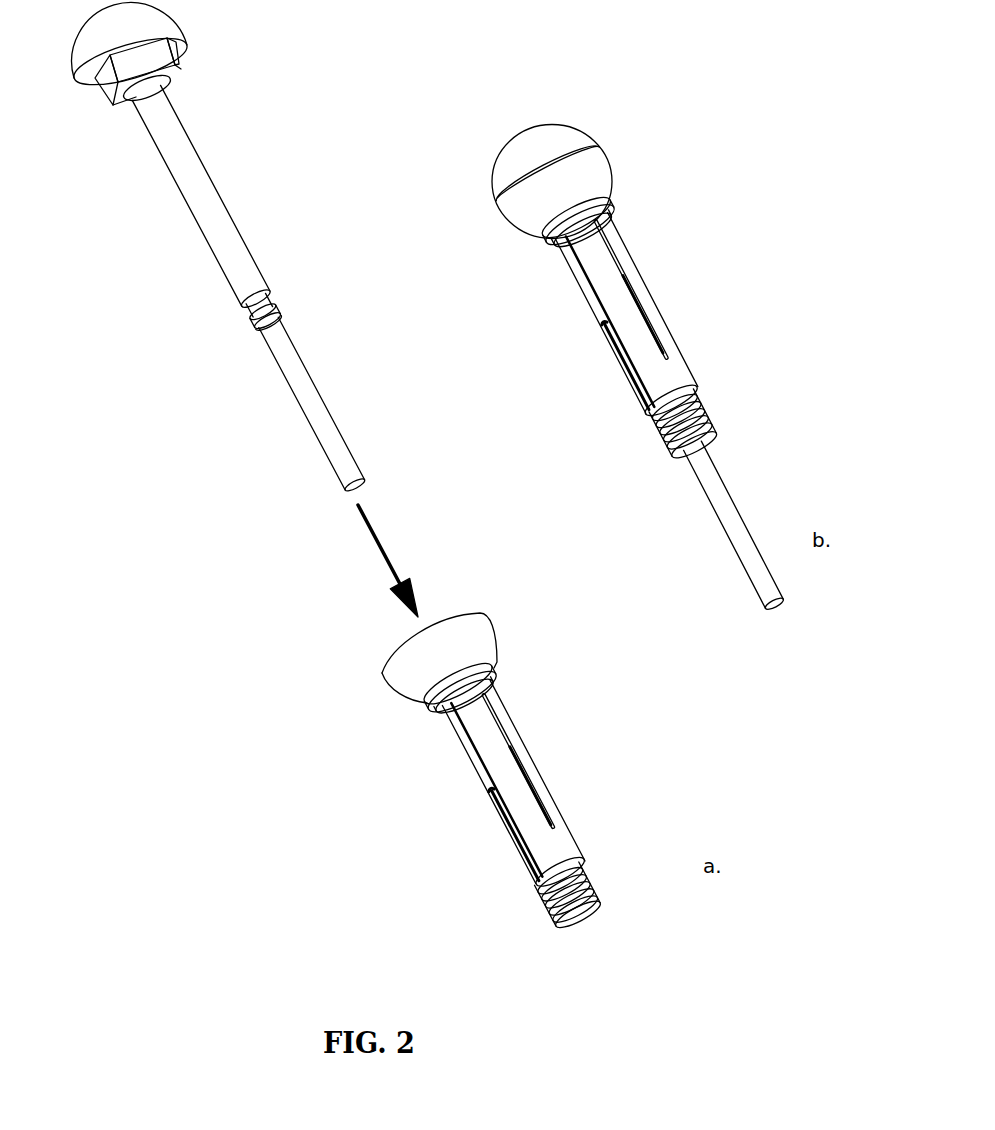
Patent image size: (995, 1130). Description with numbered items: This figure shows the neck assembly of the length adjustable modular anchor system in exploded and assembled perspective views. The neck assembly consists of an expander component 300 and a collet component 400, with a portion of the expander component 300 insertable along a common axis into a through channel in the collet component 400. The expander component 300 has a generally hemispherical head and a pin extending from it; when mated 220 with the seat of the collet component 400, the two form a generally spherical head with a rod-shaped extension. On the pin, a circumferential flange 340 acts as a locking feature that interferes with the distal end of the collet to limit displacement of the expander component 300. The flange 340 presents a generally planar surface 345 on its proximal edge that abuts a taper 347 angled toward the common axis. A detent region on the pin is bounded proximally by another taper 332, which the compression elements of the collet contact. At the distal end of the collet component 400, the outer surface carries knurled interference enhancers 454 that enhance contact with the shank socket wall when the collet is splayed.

The expander component 300 is at (226, 133).
The taper 332 is at (250, 298).
The generally planar surface 345 is at (274, 310).
The circumferential flange 340 is at (278, 313).
The taper 347 is at (280, 320).
The mated arrangement 220 is at (748, 379).
The collet component 400 is at (553, 686).
The interference enhancers 454 is at (593, 902).